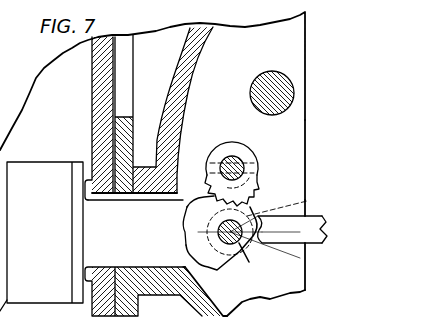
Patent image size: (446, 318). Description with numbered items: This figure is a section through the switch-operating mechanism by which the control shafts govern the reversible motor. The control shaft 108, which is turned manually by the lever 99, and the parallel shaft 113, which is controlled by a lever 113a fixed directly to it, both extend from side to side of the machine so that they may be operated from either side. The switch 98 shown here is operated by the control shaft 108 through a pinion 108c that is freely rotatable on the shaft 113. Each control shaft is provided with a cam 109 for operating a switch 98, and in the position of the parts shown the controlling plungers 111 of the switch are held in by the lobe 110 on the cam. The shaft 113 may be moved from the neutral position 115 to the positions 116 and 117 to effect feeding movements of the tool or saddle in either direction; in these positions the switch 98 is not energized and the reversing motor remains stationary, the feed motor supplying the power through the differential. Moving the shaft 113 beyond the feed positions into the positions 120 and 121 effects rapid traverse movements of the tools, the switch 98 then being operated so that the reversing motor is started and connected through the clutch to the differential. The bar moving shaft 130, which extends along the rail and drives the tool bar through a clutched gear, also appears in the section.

The switch 98 is at (45, 232).
The lever 99 is at (290, 229).
The shaft 108 is at (233, 163).
The pinion 108c is at (277, 197).
The cam 109 is at (214, 272).
The lobe 110 is at (186, 231).
The controlling plungers 111 is at (182, 215).
The shaft 113 is at (257, 263).
The lever 113a is at (281, 234).
The neutral position 115 is at (332, 229).
The feed position 116 is at (307, 208).
The feed position 117 is at (283, 247).
The traversing position 120 is at (278, 191).
The traversing position 121 is at (230, 232).
The bar moving shaft 130 is at (265, 73).